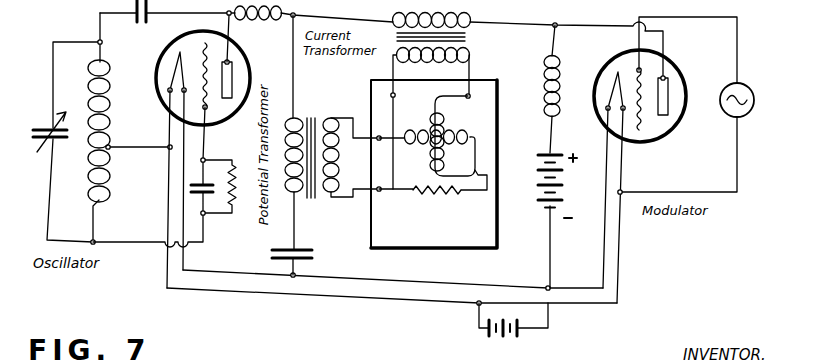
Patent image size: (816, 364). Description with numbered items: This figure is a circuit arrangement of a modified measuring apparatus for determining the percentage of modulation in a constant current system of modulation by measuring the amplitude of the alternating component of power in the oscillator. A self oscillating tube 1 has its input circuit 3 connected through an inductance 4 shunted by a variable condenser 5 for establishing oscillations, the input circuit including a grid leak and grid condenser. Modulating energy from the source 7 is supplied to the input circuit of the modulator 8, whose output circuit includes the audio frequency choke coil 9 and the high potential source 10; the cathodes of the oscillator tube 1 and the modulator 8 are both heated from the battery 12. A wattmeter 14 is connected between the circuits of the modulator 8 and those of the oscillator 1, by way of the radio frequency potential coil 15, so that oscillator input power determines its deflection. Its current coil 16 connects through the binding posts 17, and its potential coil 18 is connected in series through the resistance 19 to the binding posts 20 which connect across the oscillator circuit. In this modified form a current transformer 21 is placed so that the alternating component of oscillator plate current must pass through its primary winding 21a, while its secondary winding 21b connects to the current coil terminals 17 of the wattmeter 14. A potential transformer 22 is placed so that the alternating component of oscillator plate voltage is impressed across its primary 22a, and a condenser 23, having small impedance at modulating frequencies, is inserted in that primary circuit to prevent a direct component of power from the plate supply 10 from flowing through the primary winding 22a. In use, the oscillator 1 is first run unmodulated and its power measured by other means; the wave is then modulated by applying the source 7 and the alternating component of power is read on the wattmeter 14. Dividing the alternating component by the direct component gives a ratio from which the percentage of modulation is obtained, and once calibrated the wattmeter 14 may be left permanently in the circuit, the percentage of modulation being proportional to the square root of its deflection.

The self oscillating tube 1 is at (150, 60).
The input circuit 3 is at (193, 231).
The inductance 4 is at (107, 182).
The variable condenser 5 is at (44, 160).
The source 7 is at (758, 86).
The modulator 8 is at (689, 70).
The audio frequency choke coil 9 is at (561, 55).
The high potential source 10 is at (571, 190).
The battery 12 is at (480, 332).
The wattmeter 14 is at (446, 238).
The radio frequency potential coil 15 is at (230, 12).
The current coil 16 is at (453, 117).
The binding posts 17 is at (487, 96).
The potential coil 18 is at (478, 138).
The resistance 19 is at (449, 198).
The binding posts 20 is at (377, 142).
The current transformer 21 is at (405, 40).
The primary winding 21a is at (471, 27).
The secondary winding 21b is at (470, 57).
The potential transformer 22 is at (318, 114).
The primary winding 22a is at (292, 199).
The condenser 23 is at (312, 258).